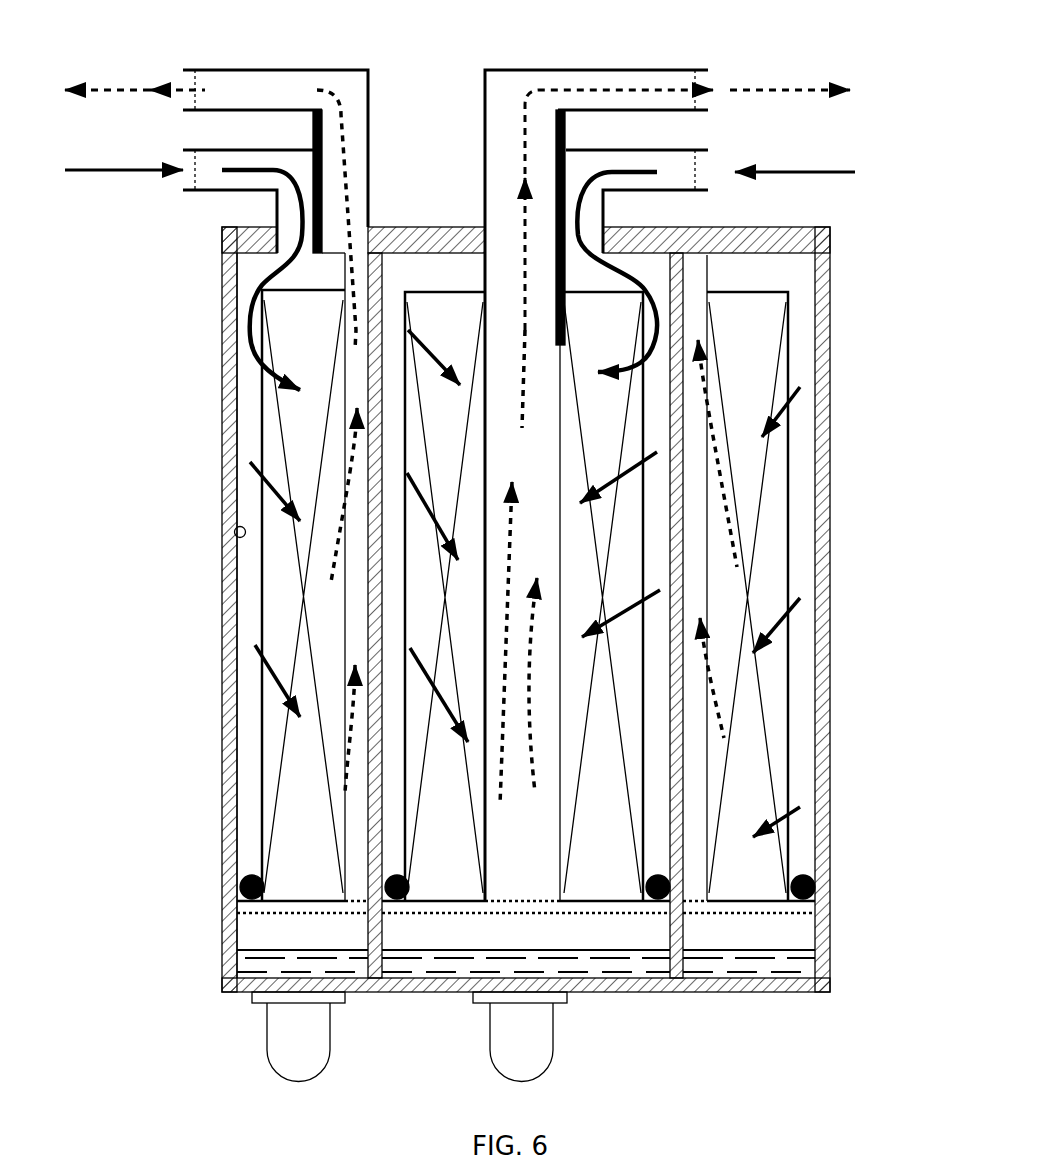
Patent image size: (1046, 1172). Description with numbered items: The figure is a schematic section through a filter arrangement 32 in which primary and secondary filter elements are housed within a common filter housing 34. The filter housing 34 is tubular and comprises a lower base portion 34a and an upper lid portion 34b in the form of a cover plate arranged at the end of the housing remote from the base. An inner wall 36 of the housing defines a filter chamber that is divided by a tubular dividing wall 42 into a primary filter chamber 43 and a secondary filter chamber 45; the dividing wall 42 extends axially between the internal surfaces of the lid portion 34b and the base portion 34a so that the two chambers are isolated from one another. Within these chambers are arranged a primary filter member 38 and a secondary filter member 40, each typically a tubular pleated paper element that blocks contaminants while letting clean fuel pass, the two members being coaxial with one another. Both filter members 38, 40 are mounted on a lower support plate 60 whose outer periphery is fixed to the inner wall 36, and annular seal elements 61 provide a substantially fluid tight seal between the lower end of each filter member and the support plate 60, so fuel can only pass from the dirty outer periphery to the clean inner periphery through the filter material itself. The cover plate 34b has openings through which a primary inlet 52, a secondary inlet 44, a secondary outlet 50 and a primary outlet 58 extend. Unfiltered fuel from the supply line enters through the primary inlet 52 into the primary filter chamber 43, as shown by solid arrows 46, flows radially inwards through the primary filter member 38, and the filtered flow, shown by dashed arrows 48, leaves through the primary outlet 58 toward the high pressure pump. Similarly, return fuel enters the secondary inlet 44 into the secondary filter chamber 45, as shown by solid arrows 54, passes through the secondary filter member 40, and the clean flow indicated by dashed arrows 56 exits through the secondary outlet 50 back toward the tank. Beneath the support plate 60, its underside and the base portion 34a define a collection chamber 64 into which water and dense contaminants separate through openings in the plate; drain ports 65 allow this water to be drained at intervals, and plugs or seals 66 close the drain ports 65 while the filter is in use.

The filter arrangement 32 is at (188, 587).
The filter housing 34 is at (830, 690).
The base portion 34a is at (236, 978).
The upper lid portion 34b is at (828, 250).
The inner wall 36 is at (231, 533).
The primary filter member 38 is at (438, 840).
The secondary filter member 40 is at (302, 790).
The dividing wall 42 is at (380, 275).
The primary filter chamber 43 is at (657, 373).
The secondary inlet 44 is at (213, 181).
The secondary filter chamber 45 is at (245, 428).
The solid arrows 46 is at (657, 287).
The dashed arrows 48 is at (536, 795).
The secondary outlet 50 is at (257, 75).
The primary inlet 52 is at (672, 173).
The solid arrows 54 is at (241, 342).
The dashed arrows 56 is at (335, 545).
The primary outlet 58 is at (634, 81).
The lower support plate 60 is at (806, 910).
The annular seal elements 61 is at (409, 893).
The collection chamber 64 is at (740, 940).
The drain ports 65 is at (272, 1005).
The plugs or seals 66 is at (330, 1035).